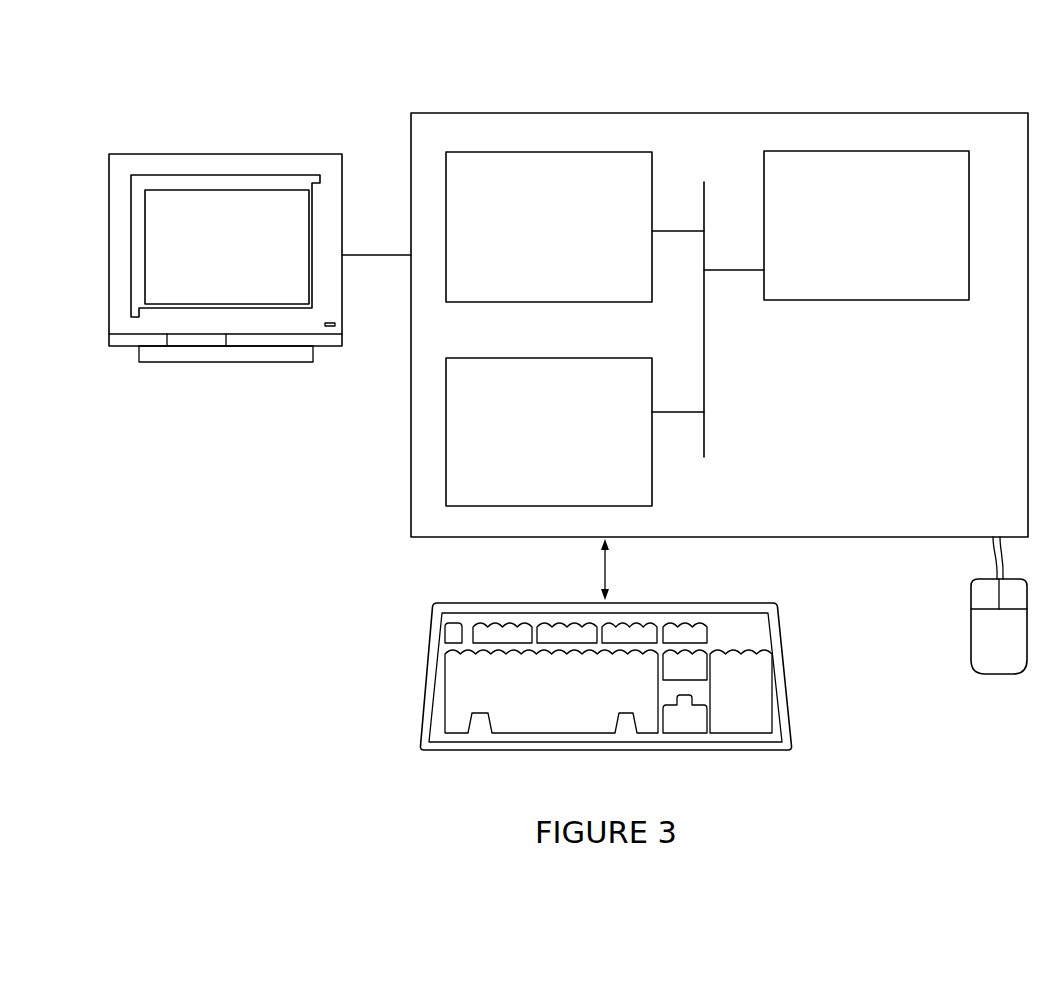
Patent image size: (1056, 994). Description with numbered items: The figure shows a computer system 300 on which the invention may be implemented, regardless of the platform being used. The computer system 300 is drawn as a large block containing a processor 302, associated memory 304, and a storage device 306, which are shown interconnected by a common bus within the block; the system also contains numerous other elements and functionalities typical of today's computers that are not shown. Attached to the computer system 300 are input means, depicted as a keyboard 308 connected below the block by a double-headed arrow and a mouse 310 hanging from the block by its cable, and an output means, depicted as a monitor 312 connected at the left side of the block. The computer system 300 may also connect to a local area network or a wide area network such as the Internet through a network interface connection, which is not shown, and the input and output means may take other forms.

The computer system 300 is at (753, 64).
The processor 302 is at (836, 239).
The memory 304 is at (530, 239).
The storage device 306 is at (529, 444).
The keyboard 308 is at (529, 701).
The mouse 310 is at (980, 649).
The monitor 312 is at (206, 259).